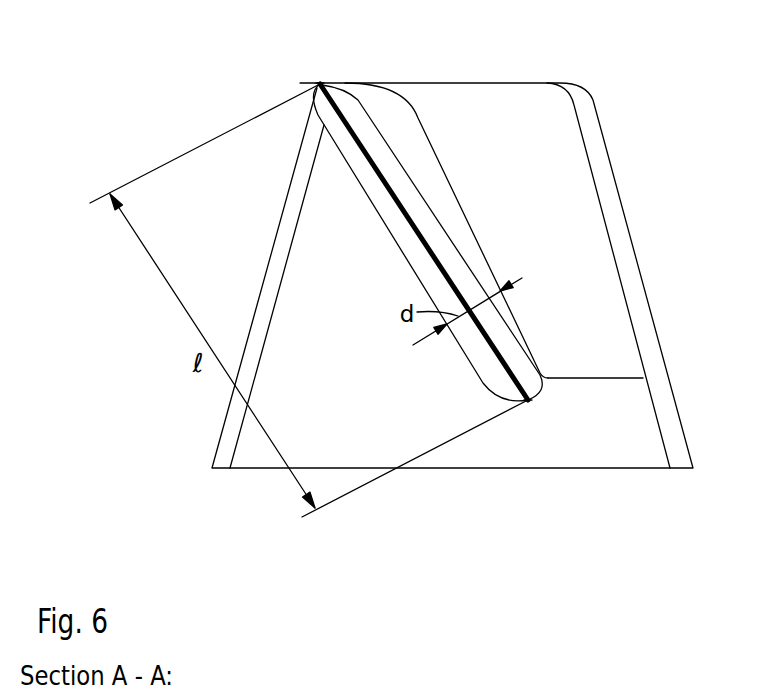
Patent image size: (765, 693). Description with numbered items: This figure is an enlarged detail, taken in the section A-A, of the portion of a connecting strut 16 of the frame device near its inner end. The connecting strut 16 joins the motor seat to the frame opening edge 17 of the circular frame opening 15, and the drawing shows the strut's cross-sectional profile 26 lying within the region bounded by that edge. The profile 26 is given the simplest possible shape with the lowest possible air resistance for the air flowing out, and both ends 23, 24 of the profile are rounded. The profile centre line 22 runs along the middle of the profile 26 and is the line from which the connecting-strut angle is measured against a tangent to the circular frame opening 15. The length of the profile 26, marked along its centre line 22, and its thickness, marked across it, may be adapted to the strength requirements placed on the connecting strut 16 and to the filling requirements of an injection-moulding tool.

The circular frame opening 15 is at (637, 344).
The connecting strut 16 is at (360, 117).
The frame opening edge 17 is at (665, 408).
The profile centre line 22 is at (385, 178).
The end of the profile 23 is at (528, 401).
The end of the profile 24 is at (320, 83).
The cross-sectional profile 26 is at (340, 148).